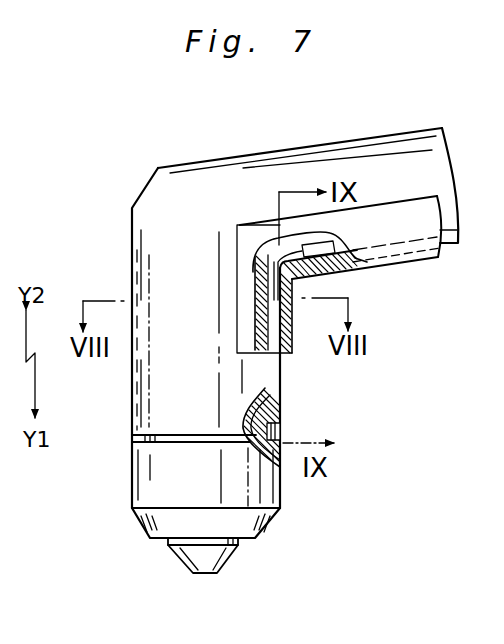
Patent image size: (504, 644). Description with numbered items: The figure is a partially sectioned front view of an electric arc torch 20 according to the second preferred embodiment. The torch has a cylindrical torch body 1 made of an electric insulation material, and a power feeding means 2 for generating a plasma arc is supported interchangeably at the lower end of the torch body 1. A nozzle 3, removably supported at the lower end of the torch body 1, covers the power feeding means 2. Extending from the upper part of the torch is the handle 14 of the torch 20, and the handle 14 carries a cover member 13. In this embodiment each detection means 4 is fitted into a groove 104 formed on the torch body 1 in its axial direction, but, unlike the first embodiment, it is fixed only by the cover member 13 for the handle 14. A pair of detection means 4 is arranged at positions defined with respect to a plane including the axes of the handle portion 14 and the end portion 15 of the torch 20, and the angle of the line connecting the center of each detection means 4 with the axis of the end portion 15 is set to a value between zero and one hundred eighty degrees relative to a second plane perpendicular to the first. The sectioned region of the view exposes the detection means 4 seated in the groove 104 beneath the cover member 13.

The torch body 1 is at (143, 413).
The power feeding means 2 is at (238, 553).
The nozzle 3 is at (277, 490).
The detection means 4 is at (273, 338).
The cover member 13 is at (353, 280).
The handle 14 is at (421, 140).
The end portion 15 is at (283, 428).
The electric arc torch 20 is at (177, 164).
The groove 104 is at (265, 396).